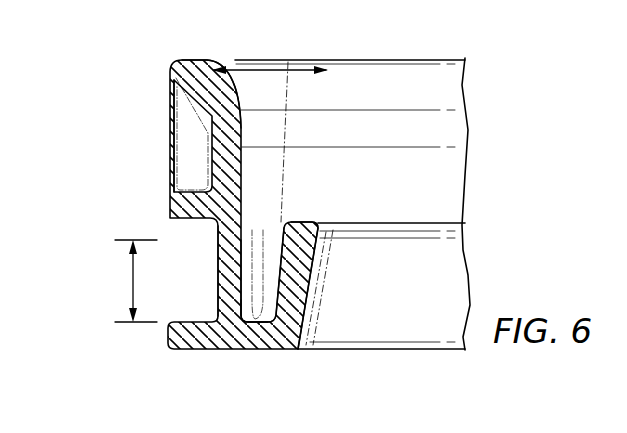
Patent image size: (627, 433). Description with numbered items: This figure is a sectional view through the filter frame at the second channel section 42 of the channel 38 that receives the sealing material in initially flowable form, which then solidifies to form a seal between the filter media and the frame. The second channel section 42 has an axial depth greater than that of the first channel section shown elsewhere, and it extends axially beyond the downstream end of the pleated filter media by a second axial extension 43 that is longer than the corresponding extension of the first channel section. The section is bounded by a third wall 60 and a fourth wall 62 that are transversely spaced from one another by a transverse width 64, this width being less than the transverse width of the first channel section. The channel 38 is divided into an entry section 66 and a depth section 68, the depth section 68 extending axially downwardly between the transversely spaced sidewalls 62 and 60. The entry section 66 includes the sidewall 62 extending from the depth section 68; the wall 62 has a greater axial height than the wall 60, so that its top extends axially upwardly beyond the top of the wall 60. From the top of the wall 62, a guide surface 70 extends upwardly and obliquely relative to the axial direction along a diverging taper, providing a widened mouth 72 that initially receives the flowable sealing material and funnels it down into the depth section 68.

The widened mouth 72 is at (208, 61).
The transverse width 64 is at (295, 72).
The guide surface 70 is at (236, 86).
The entry section 66 is at (229, 104).
The channel 38 is at (265, 222).
The second axial extension 43 is at (131, 282).
The fourth wall 62 is at (219, 247).
The second channel section 42 is at (255, 279).
The depth section 68 is at (256, 298).
The third wall 60 is at (303, 271).